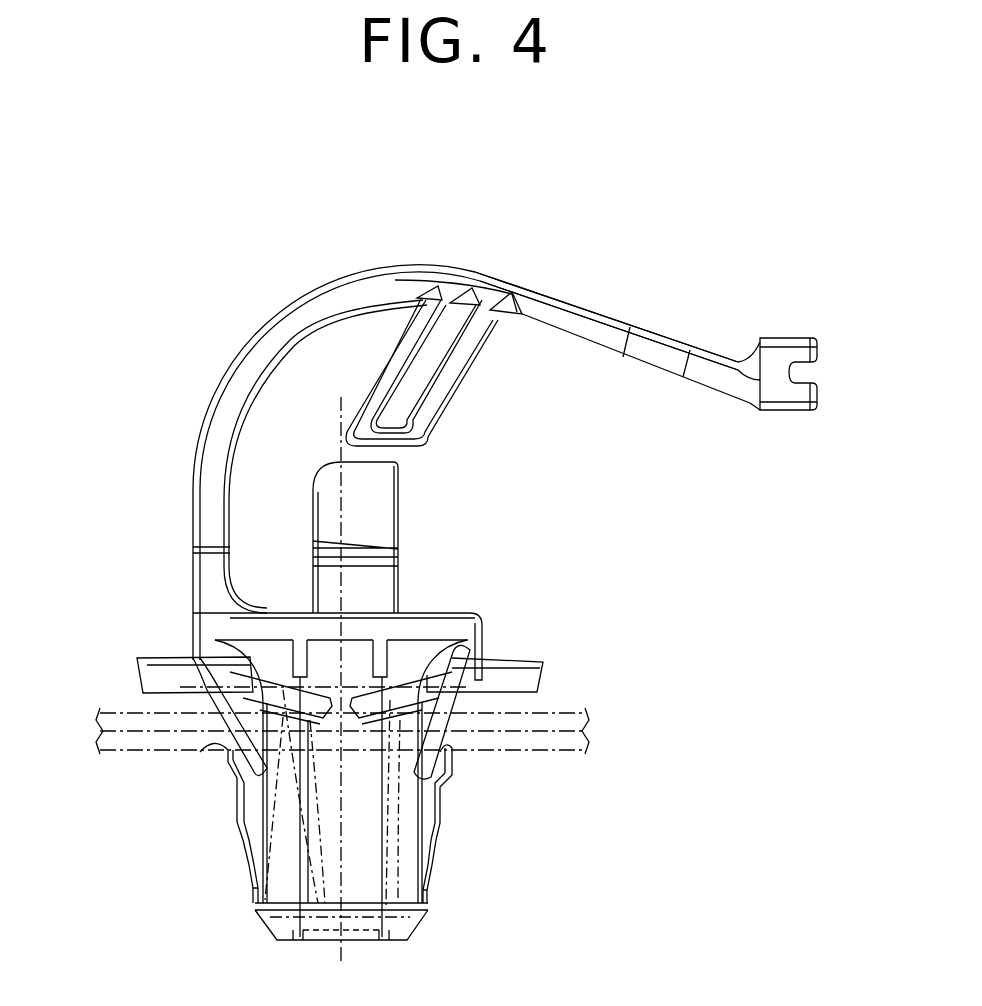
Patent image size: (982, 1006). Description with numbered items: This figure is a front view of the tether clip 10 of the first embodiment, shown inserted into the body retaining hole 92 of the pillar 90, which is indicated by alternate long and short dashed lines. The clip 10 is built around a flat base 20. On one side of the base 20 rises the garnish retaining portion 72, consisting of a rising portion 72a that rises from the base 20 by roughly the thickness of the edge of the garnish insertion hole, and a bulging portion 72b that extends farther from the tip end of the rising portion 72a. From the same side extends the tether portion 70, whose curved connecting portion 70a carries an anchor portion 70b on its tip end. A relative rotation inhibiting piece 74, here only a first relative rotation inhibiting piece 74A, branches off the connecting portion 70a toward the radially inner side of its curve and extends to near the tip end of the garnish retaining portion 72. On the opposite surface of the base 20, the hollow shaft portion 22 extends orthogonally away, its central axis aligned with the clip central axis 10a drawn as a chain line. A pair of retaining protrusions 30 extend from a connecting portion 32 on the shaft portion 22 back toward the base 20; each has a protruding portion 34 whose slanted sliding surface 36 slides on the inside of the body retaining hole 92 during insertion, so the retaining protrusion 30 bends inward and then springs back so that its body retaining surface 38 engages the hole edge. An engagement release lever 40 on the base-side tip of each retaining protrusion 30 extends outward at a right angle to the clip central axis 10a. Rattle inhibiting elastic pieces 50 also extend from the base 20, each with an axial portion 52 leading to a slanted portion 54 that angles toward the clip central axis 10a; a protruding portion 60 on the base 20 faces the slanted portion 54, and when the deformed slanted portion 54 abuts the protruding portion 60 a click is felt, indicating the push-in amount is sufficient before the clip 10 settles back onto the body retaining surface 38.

The tether clip 10 is at (434, 888).
The clip central axis 10a is at (343, 940).
The base 20 is at (428, 620).
The shaft portion 22 is at (370, 847).
The retaining protrusion 30 is at (118, 752).
The connecting portion 32 is at (250, 863).
The protruding portion 34 is at (240, 787).
The sliding surface 36 is at (240, 835).
The body retaining surface 38 is at (236, 772).
The engagement release lever 40 is at (173, 690).
The rattle inhibiting elastic piece 50 is at (112, 578).
The axial portion 52 is at (203, 653).
The slanted portion 54 is at (205, 695).
The protruding portion 60 is at (380, 662).
The tether portion 70 is at (822, 174).
The connecting portion 70a is at (620, 320).
The anchor portion 70b is at (778, 348).
The garnish retaining portion 72 is at (112, 490).
The rising portion 72a is at (313, 552).
The bulging portion 72b is at (330, 510).
The relative rotation inhibiting piece 74 is at (465, 462).
The first relative rotation inhibiting piece 74A is at (383, 387).
The pillar 90 is at (595, 724).
The body retaining hole 92 is at (290, 976).